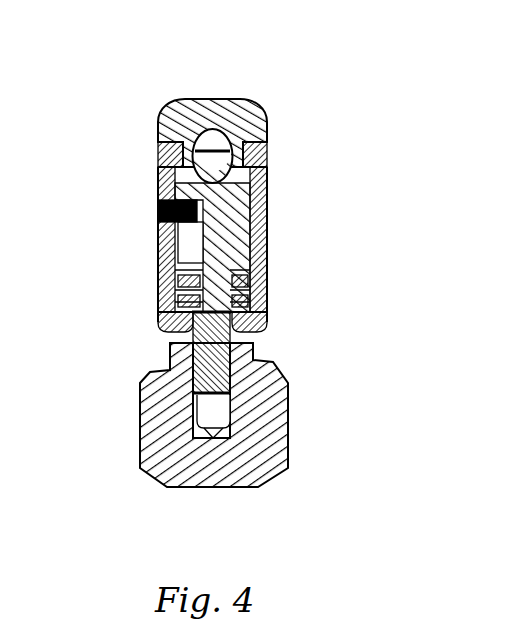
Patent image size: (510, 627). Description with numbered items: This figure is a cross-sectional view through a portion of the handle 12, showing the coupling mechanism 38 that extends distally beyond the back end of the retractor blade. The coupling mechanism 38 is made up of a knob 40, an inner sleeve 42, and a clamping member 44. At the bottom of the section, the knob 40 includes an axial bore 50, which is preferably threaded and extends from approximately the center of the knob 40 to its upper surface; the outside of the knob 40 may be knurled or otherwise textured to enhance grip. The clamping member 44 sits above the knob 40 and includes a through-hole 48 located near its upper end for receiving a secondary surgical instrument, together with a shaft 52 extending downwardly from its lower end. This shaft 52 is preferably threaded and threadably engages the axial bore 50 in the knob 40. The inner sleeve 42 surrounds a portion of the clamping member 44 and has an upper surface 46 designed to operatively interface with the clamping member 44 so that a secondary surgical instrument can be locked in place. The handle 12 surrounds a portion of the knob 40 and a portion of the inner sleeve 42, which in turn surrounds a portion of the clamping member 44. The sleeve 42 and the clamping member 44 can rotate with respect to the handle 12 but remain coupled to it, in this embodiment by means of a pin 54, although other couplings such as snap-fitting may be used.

The coupling mechanism 38 is at (101, 109).
The knob 40 is at (140, 405).
The inner sleeve 42 is at (158, 162).
The clamping member 44 is at (238, 100).
The upper surface 46 is at (270, 150).
The through-hole 48 is at (193, 100).
The axial bore 50 is at (240, 365).
The shaft 52 is at (237, 418).
The pin 54 is at (158, 208).
The handle 12 is at (268, 200).